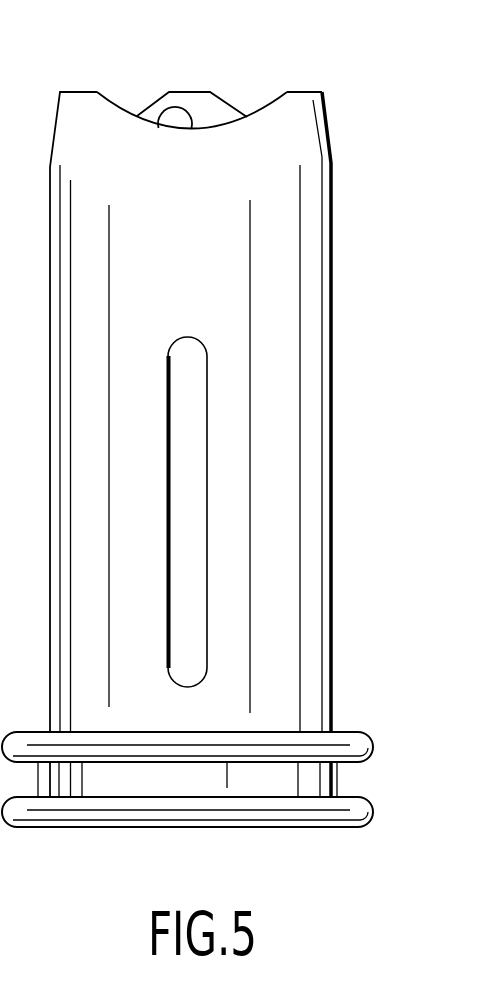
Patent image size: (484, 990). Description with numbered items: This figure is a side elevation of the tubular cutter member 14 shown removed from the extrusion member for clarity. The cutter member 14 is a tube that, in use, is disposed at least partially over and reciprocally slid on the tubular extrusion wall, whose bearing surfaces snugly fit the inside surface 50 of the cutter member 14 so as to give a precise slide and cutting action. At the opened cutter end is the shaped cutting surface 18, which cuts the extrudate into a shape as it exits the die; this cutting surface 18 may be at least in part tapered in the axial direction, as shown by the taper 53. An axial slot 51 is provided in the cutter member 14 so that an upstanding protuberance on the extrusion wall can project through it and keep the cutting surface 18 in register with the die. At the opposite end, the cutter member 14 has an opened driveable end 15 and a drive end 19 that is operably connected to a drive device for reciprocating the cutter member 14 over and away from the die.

The tubular cutter member 14 is at (228, 286).
The inside surface 50 is at (218, 113).
The cutting surface 18 is at (193, 128).
The taper 53 is at (332, 127).
The slot 51 is at (183, 517).
The drive end 19 is at (340, 778).
The opened driveable end 15 is at (375, 808).